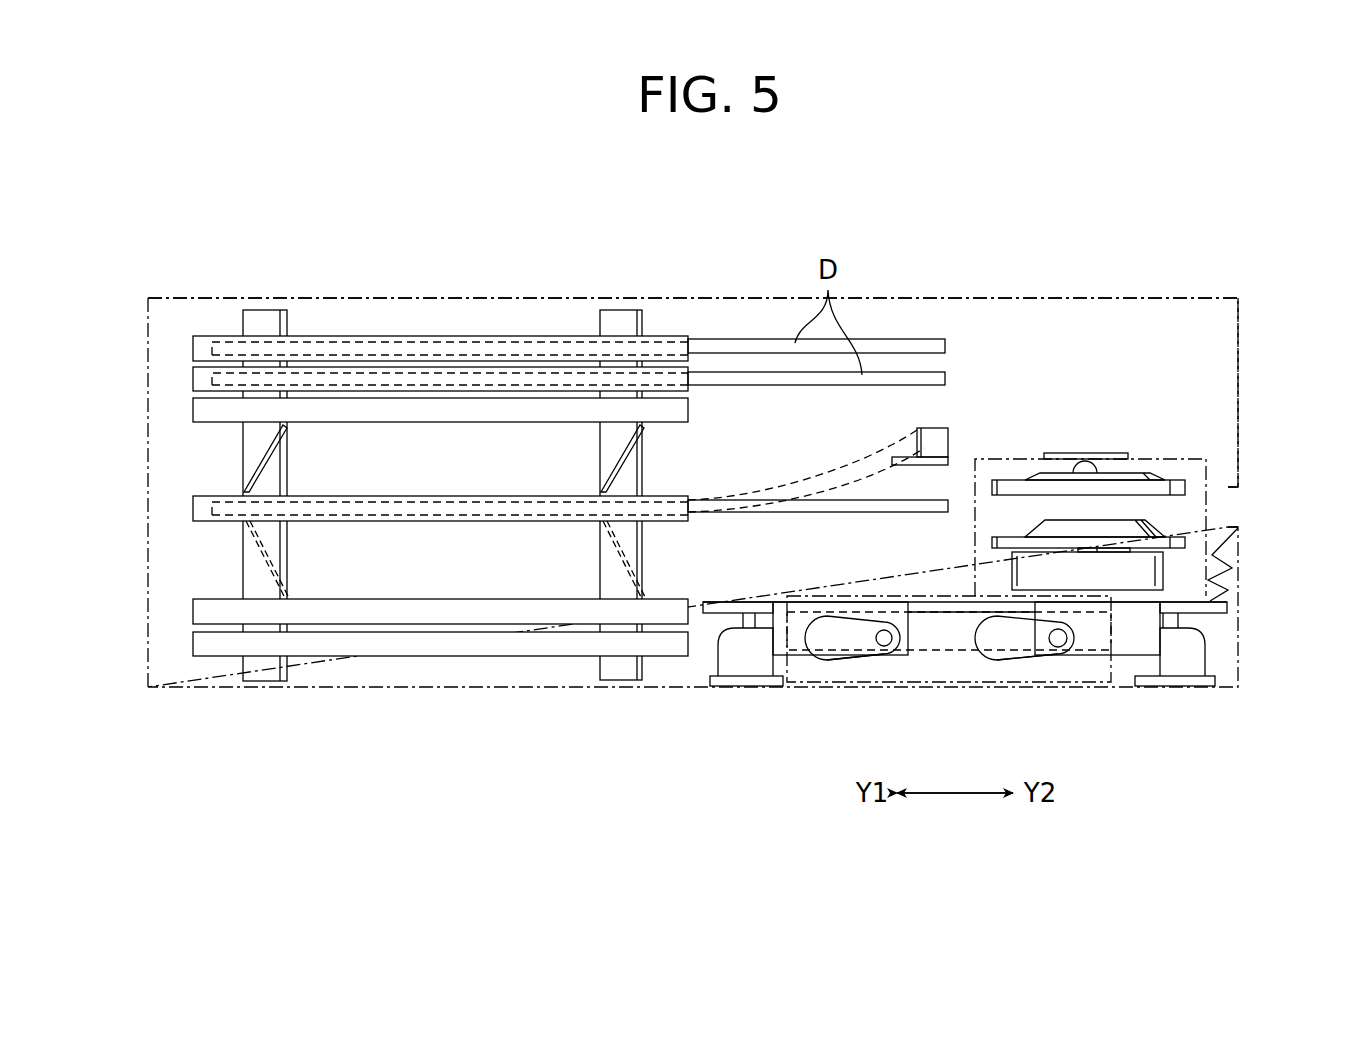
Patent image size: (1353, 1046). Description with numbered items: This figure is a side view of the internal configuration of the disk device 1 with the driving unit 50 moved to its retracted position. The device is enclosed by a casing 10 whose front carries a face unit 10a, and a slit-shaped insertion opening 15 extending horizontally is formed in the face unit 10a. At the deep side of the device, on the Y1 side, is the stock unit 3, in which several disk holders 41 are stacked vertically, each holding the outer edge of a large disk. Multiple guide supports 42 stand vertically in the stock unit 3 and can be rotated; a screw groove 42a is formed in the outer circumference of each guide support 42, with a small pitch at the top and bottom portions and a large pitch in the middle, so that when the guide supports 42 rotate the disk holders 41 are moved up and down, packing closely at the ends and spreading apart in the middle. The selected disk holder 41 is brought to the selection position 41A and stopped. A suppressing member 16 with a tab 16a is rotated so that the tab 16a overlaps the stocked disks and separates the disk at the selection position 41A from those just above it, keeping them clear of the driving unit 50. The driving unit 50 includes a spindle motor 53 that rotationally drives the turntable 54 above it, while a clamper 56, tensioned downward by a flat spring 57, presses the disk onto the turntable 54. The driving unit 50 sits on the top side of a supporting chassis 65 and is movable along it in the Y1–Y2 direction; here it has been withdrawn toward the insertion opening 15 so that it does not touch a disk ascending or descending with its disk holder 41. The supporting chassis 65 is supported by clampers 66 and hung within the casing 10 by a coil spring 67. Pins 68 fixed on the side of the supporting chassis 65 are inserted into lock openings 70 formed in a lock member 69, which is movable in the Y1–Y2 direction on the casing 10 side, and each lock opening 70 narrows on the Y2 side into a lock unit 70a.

The disk device 1 is at (624, 280).
The stock unit 3 is at (190, 468).
The casing 10 is at (470, 702).
The face unit 10a is at (1252, 335).
The insertion opening 15 is at (1232, 508).
The suppressing member 16 is at (946, 440).
The tab 16a is at (910, 466).
The disk holder 41 is at (193, 415).
The selection position 41A is at (426, 487).
The guide support 42 is at (287, 553).
The screw groove 42a is at (284, 450).
The driving unit 50 is at (1163, 456).
The spindle motor 53 is at (1040, 572).
The turntable 54 is at (1022, 537).
The clamper 56 is at (1040, 477).
The flat spring 57 is at (1092, 455).
The supporting chassis 65 is at (716, 642).
The clamper 66 is at (750, 648).
The coil spring 67 is at (1225, 572).
The pin 68 is at (882, 645).
The lock member 69 is at (952, 656).
The lock opening 70 is at (827, 662).
The lock unit 70a is at (898, 652).